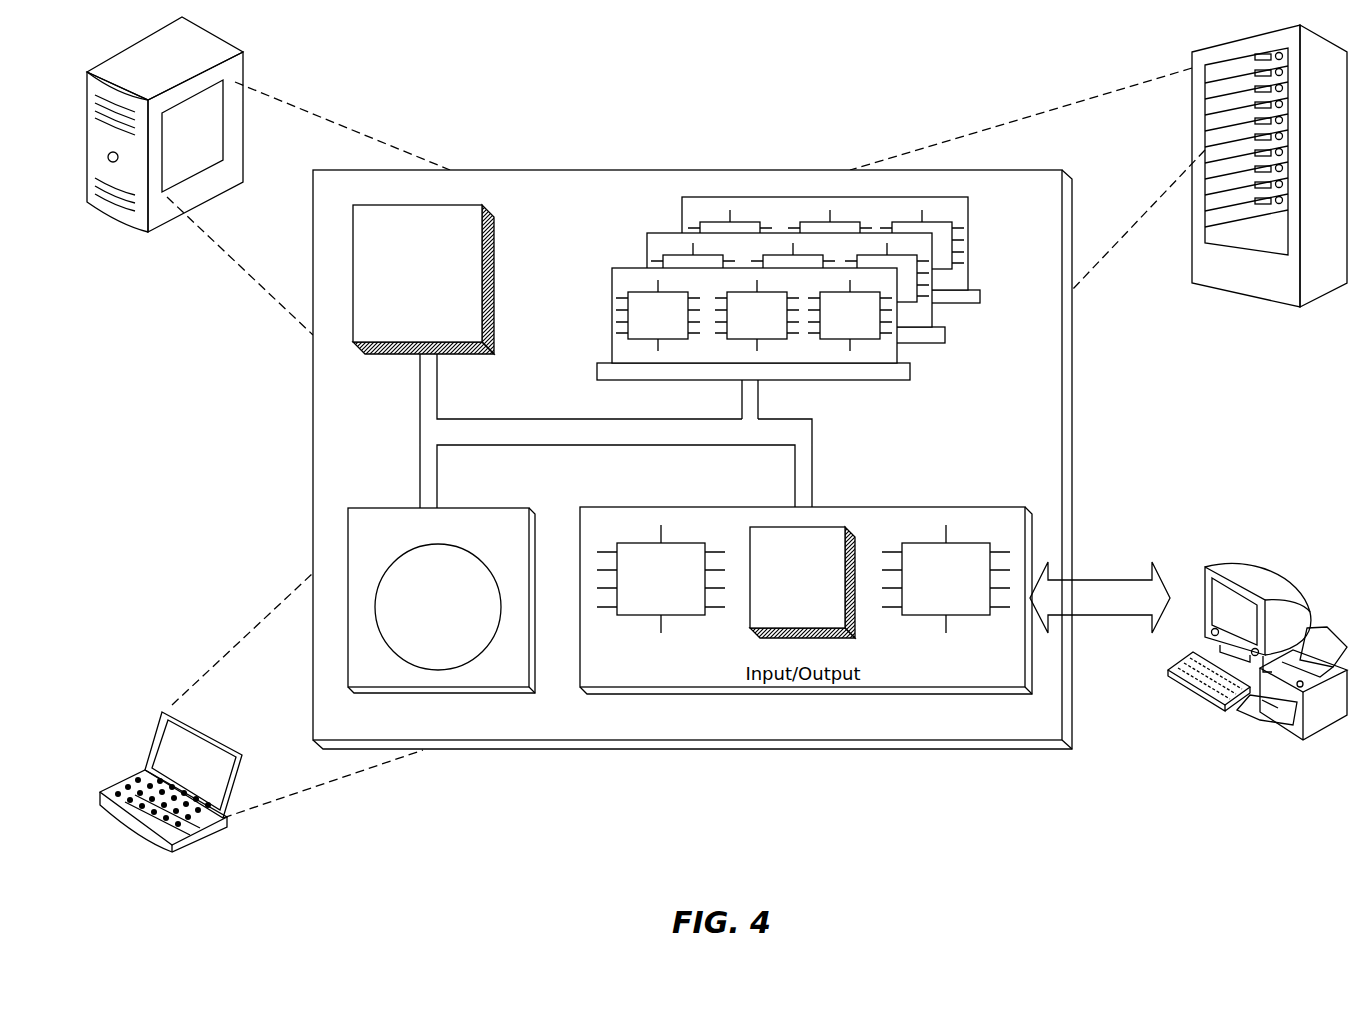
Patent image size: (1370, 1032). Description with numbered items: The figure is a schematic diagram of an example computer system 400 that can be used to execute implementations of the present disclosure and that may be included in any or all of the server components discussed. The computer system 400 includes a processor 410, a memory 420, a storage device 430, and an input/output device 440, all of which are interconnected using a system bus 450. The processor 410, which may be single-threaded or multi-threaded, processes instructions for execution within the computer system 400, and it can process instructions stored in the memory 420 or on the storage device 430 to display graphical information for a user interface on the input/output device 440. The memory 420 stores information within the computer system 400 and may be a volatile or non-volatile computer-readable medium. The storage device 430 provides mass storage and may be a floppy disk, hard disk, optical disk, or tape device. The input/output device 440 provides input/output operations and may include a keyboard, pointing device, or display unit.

The computer system 400 is at (515, 100).
The processor 410 is at (423, 279).
The memory 420 is at (975, 342).
The storage device 430 is at (441, 600).
The input/output device 440 is at (1207, 568).
The system bus 450 is at (606, 440).